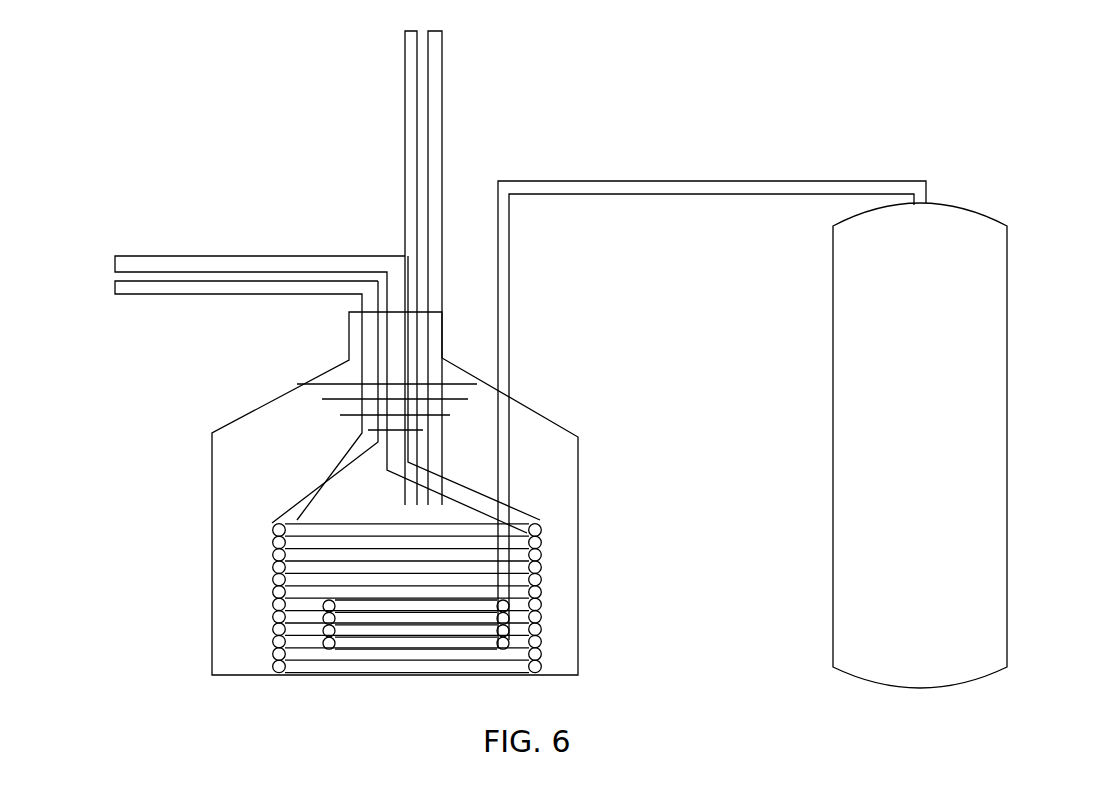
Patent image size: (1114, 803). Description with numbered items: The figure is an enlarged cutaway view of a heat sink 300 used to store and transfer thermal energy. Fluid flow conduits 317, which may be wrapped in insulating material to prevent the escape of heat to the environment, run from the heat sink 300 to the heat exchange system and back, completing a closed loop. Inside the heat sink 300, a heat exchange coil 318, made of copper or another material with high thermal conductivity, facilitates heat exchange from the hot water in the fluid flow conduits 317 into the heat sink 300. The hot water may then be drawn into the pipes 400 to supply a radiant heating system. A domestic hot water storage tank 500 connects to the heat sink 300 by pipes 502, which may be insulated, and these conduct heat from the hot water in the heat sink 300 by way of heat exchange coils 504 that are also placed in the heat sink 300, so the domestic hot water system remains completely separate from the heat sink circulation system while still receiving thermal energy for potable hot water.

The heat sink 300 is at (212, 545).
The fluid flow conduits 317 is at (206, 256).
The heat exchange coil 318 is at (543, 551).
The pipes 400 is at (427, 127).
The domestic hot water storage tank 500 is at (1007, 447).
The pipes 502 is at (683, 181).
The heat exchange coils 504 is at (512, 640).